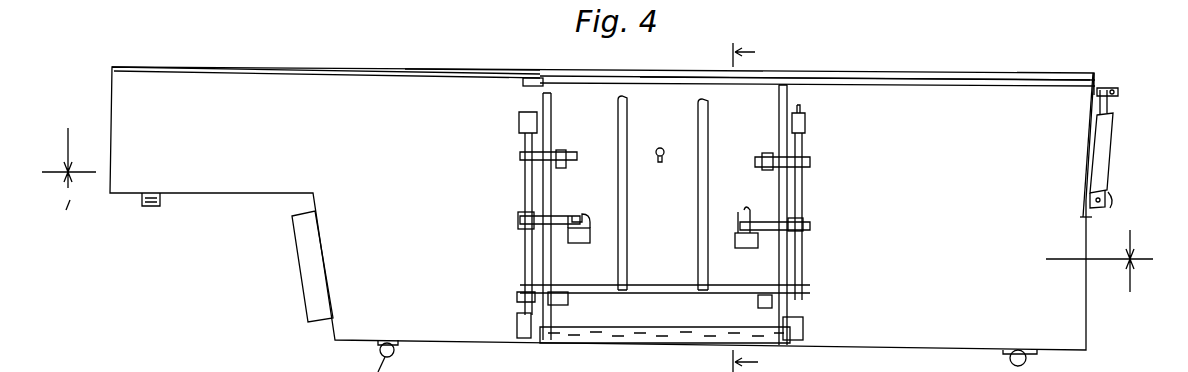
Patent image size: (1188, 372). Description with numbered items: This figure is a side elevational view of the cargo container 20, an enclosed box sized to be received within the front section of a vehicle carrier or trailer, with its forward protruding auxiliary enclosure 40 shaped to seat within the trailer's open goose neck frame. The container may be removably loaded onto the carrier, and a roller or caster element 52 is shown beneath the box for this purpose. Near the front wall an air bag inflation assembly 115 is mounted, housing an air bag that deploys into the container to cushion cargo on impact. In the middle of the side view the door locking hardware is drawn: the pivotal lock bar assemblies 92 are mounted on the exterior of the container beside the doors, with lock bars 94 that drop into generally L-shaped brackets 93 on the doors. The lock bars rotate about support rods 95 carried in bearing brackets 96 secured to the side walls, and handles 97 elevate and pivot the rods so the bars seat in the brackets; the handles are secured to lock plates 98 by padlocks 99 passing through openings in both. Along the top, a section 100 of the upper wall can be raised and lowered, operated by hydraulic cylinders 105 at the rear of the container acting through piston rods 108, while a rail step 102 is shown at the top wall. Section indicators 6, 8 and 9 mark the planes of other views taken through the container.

The cargo container 20 is at (848, 78).
The auxiliary enclosure 40 is at (248, 95).
The caster 52 is at (365, 364).
The pivotal lock bar assembly 92 is at (526, 195).
The L-shaped bracket 93 is at (566, 168).
The lock bar 94 is at (602, 120).
The support rod 95 is at (800, 268).
The bearing bracket 96 is at (808, 128).
The handle 97 is at (548, 228).
The lock plate 98 is at (752, 197).
The padlock 99 is at (735, 240).
The roof section 100 is at (1030, 78).
The rail step 102 is at (503, 36).
The hydraulic cylinder 105 is at (1105, 150).
The piston rod 108 is at (1112, 98).
The air bag inflation assembly 115 is at (302, 294).
The section line 6 is at (593, 209).
The section line 8 is at (591, 244).
The section line 9 is at (759, 206).